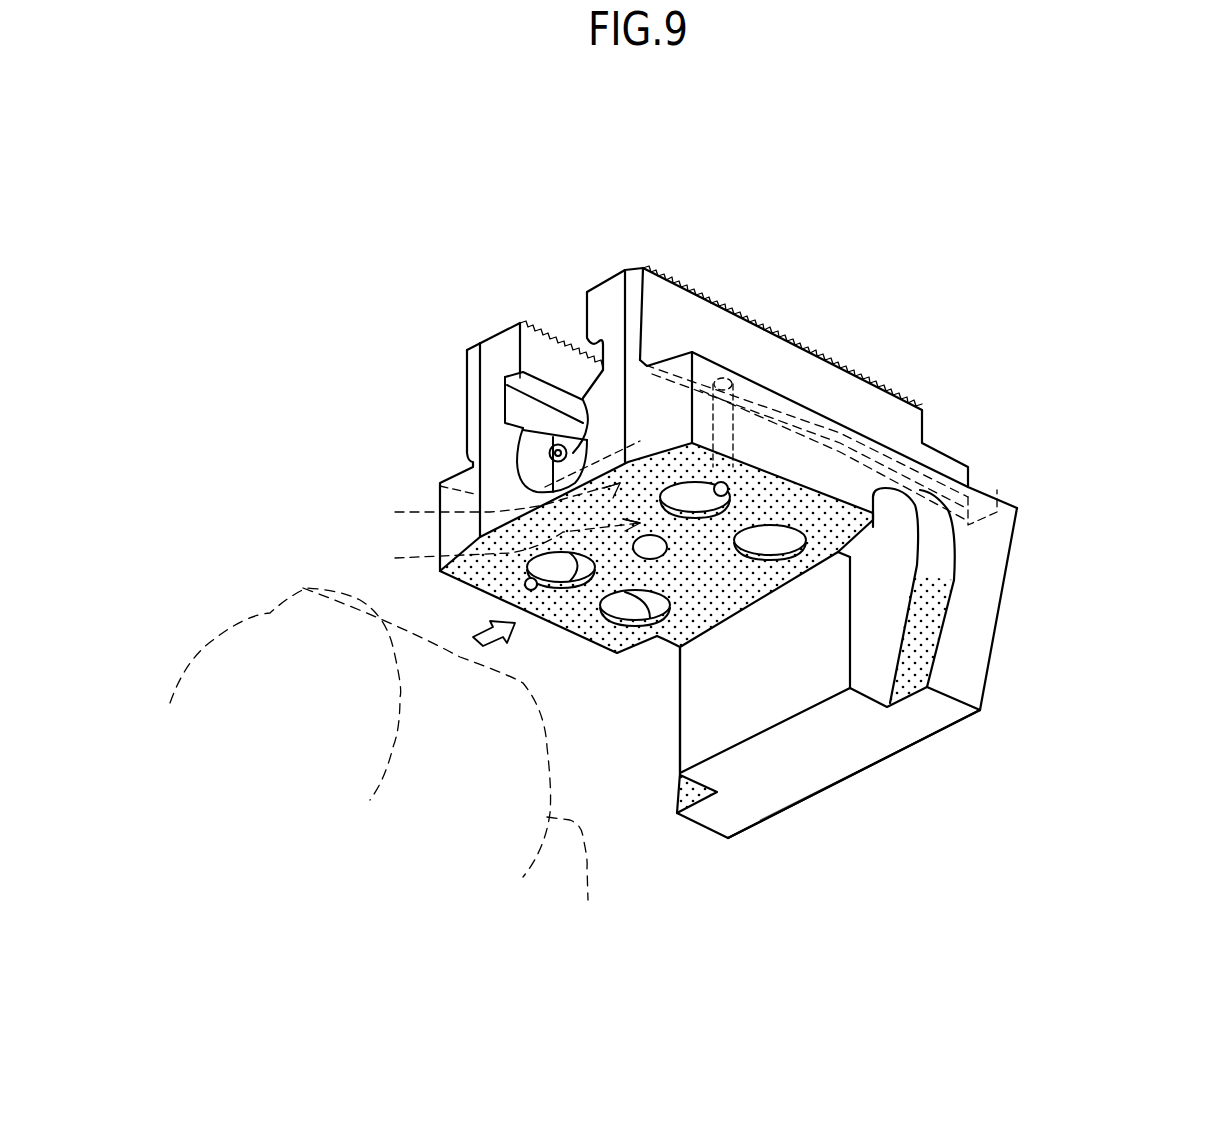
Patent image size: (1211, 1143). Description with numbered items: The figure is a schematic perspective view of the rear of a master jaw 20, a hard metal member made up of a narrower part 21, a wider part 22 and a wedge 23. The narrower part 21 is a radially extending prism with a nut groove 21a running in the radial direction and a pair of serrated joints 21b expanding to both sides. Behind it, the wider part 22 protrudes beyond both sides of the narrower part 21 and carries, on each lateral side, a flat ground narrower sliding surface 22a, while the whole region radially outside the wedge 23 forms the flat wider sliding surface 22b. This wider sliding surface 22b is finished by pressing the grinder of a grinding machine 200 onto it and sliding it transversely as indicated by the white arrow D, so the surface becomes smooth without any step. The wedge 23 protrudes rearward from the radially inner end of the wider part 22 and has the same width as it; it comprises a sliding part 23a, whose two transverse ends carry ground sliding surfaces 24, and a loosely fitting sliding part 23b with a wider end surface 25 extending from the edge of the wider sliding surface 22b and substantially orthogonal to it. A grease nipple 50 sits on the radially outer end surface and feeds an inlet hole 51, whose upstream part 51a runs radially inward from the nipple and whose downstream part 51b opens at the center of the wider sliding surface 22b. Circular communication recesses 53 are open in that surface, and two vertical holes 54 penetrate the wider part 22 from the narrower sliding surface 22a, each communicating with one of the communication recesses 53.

The master jaw 20 is at (997, 758).
The narrower part 21 is at (765, 361).
The nut groove 21a is at (547, 372).
The serrated joints 21b is at (484, 343).
The wider part 22 is at (813, 443).
The narrower sliding surface 22a is at (987, 500).
The wider sliding surface 22b is at (567, 620).
The wedge 23 is at (957, 852).
The sliding part 23a is at (897, 733).
The loosely fitting sliding part 23b is at (807, 723).
The sliding surfaces 24 is at (923, 633).
The wider end surface 25 is at (750, 710).
The grease nipple 50 is at (580, 441).
The inlet hole 51 is at (332, 497).
The upstream part 51a is at (477, 510).
The downstream part 51b is at (487, 549).
The communication recesses 53 is at (777, 547).
The vertical holes 54 is at (722, 428).
The grinding machine 200 is at (392, 766).
The white arrow D is at (493, 637).